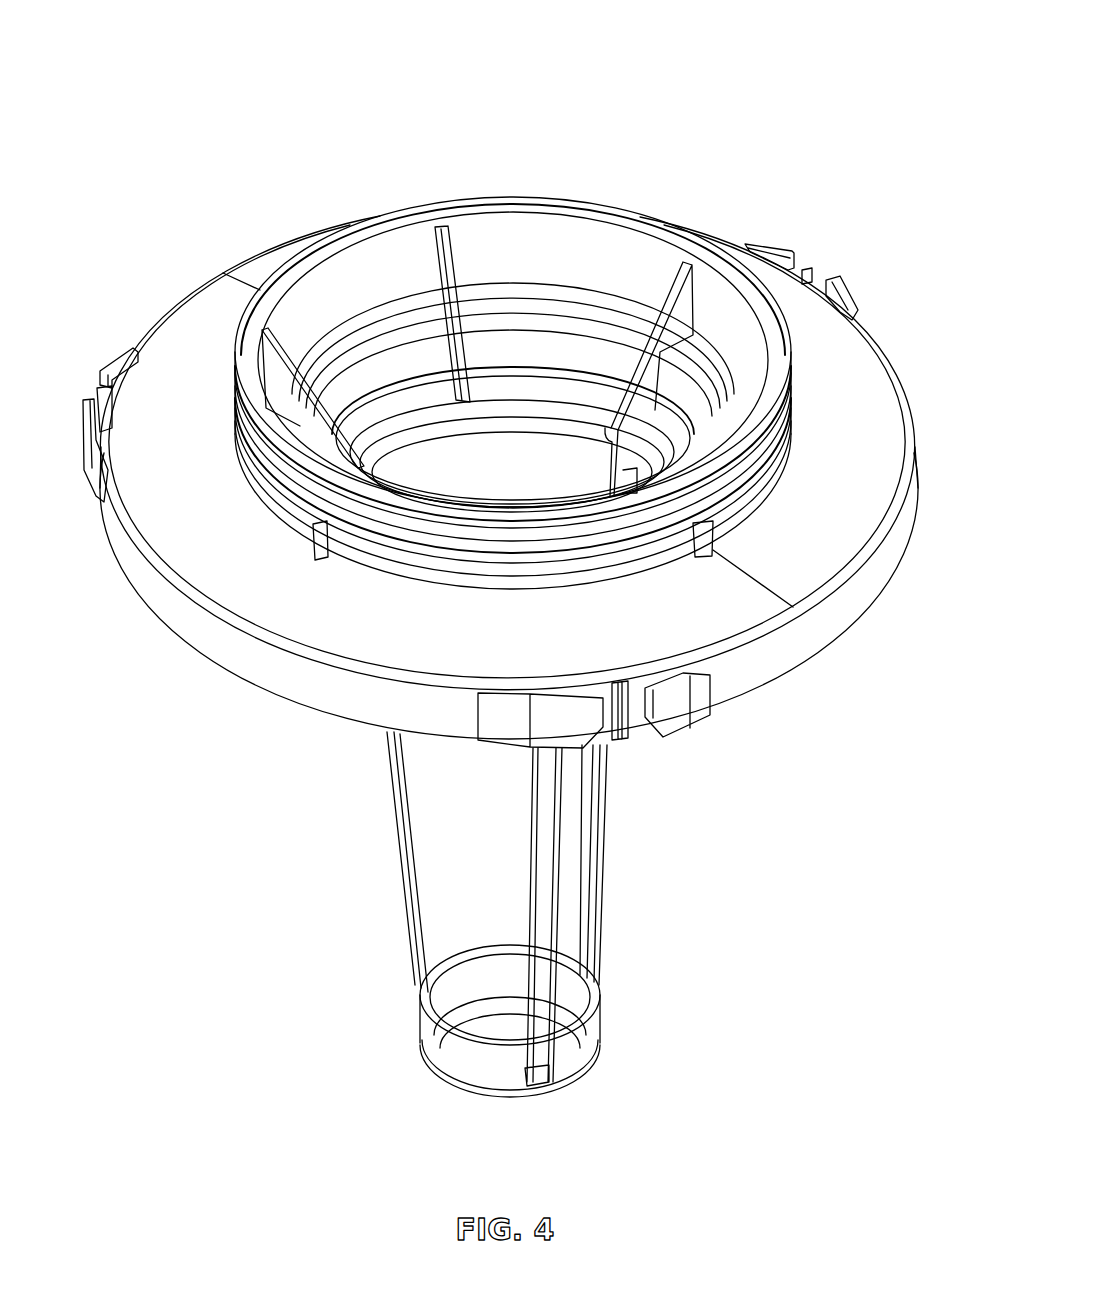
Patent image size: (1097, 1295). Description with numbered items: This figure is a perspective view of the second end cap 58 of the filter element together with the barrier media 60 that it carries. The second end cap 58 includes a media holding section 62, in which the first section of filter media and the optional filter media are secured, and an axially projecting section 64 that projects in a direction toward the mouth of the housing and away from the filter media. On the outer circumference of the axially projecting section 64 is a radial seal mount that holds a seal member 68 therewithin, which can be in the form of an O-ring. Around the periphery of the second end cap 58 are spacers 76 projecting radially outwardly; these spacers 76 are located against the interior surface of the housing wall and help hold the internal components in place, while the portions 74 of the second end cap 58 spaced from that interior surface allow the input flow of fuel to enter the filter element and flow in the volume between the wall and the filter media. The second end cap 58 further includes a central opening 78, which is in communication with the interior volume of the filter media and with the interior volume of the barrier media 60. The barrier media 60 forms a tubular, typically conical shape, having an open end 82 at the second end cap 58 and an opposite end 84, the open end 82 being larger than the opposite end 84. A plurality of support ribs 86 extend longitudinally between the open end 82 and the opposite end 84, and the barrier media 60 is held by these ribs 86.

The second end cap 58 is at (812, 48).
The barrier media 60 is at (350, 860).
The media holding section 62 is at (887, 457).
The axially projecting section 64 is at (520, 225).
The seal member 68 is at (768, 446).
The portions 74 is at (870, 600).
The spacers 76 is at (110, 360).
The central opening 78 is at (433, 440).
The open end 82 is at (578, 432).
The opposite end 84 is at (512, 1100).
The support ribs 86 is at (408, 917).